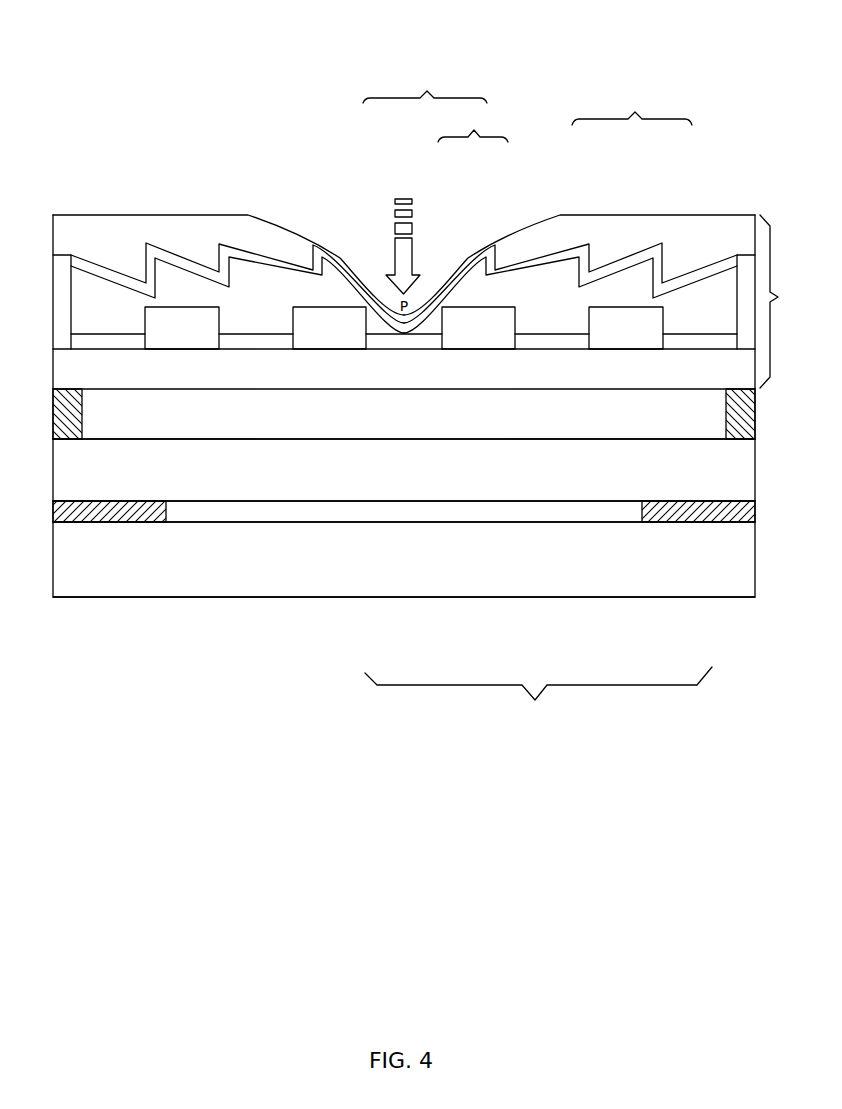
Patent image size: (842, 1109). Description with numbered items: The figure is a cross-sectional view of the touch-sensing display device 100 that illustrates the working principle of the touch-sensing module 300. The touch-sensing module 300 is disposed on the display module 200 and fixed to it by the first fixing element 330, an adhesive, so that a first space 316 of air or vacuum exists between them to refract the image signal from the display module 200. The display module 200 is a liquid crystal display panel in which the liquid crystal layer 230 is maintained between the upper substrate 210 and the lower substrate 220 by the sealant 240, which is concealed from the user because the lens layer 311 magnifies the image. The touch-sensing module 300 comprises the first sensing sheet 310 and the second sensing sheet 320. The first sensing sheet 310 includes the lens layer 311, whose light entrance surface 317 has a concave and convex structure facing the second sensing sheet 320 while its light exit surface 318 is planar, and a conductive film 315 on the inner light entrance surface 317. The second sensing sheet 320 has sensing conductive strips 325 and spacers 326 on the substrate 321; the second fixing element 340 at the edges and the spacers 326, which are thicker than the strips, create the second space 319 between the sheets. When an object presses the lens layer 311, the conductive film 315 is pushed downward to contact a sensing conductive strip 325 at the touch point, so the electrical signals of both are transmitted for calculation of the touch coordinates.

The touch-sensing display device 100 is at (185, 30).
The display module 200 is at (538, 697).
The upper substrate 210 is at (582, 483).
The lower substrate 220 is at (483, 572).
The liquid crystal layer 230 is at (372, 510).
The sealant 240 is at (705, 513).
The touch-sensing module 300 is at (787, 301).
The first sensing sheet 310 is at (425, 87).
The lens layer 311 is at (473, 125).
The conductive film 315 is at (348, 278).
The first space 316 is at (130, 450).
The light entrance surface 317 is at (515, 268).
The light exit surface 318 is at (490, 246).
The second space 319 is at (58, 303).
The second sensing sheet 320 is at (632, 109).
The substrate 321 is at (563, 370).
The sensing conductive strips 325 is at (695, 343).
The spacers 326 is at (625, 320).
The first fixing element 330 is at (63, 415).
The second fixing element 340 is at (62, 265).